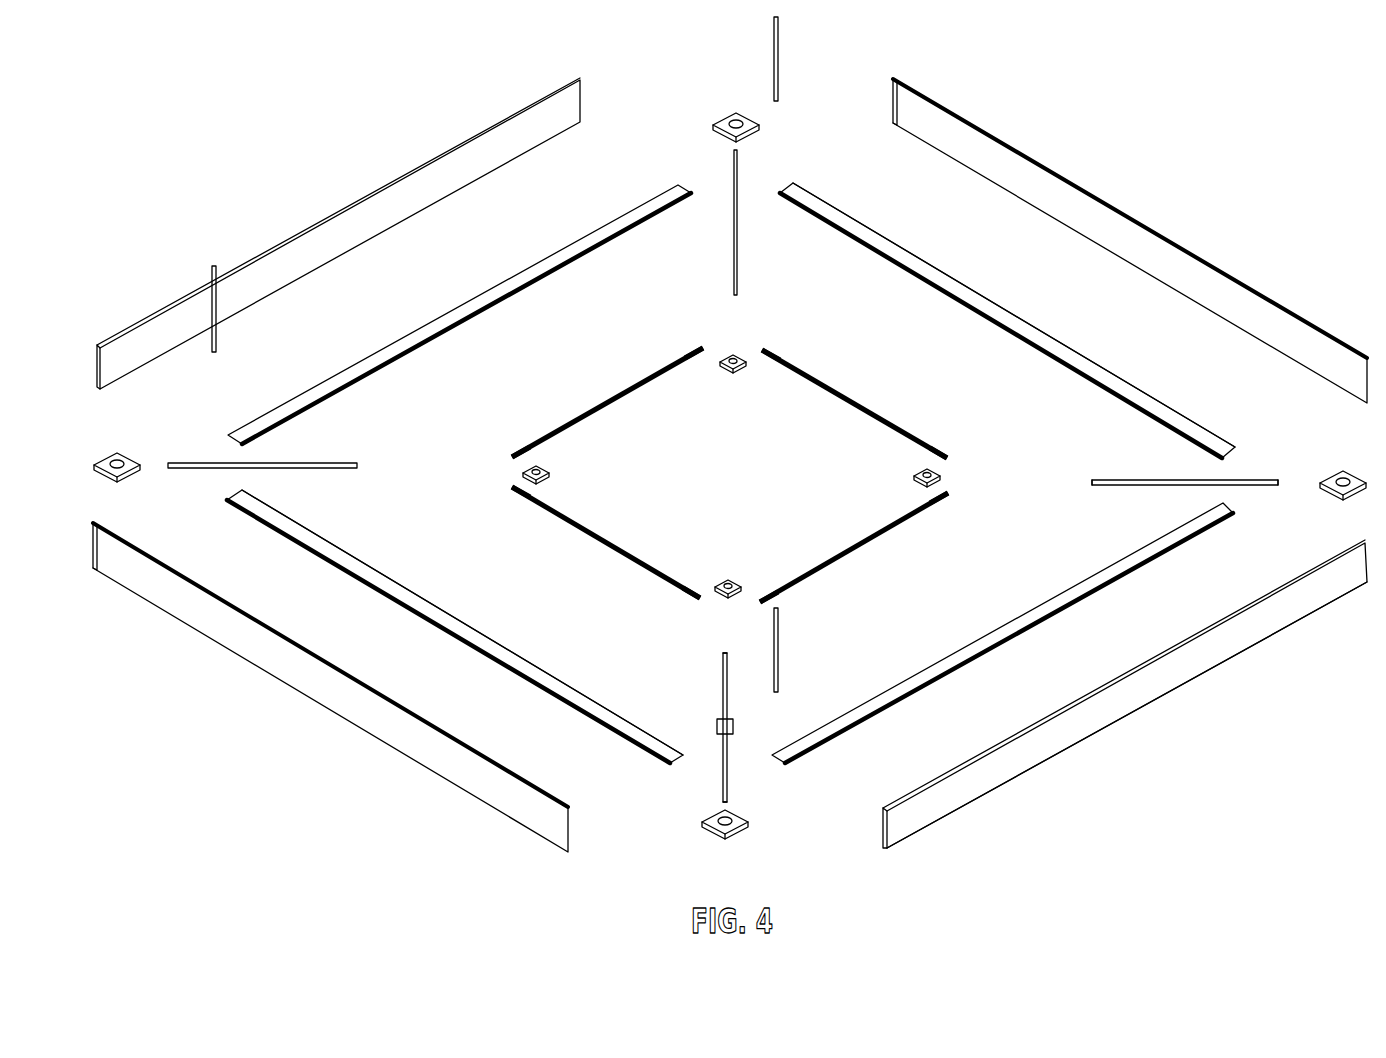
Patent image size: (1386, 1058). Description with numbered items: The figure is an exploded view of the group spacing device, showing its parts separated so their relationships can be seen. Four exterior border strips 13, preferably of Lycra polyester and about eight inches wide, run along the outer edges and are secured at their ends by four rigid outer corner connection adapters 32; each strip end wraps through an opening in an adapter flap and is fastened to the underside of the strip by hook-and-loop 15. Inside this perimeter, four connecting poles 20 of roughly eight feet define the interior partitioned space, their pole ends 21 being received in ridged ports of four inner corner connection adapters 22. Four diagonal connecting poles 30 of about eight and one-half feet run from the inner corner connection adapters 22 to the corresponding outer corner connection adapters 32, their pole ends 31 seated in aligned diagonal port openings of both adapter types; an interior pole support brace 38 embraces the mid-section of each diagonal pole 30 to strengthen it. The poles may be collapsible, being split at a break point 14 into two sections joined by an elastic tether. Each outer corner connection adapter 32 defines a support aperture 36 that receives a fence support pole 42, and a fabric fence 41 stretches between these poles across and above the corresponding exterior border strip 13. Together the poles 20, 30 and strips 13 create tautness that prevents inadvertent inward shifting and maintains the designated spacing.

The exterior border strip 13 is at (372, 352).
The break point 14 is at (818, 218).
The hook-and-loop 15 is at (293, 415).
The connecting pole 20 is at (640, 382).
The pole end 21 is at (540, 436).
The inner corner connection adapter 22 is at (738, 354).
The diagonal connecting pole 30 is at (733, 166).
The pole end 31 is at (1092, 480).
The outer corner connection adapter 32 is at (718, 118).
The support aperture 36 is at (737, 115).
The interior pole support brace 38 is at (733, 725).
The fence 41 is at (497, 124).
The fence support pole 42 is at (779, 62).